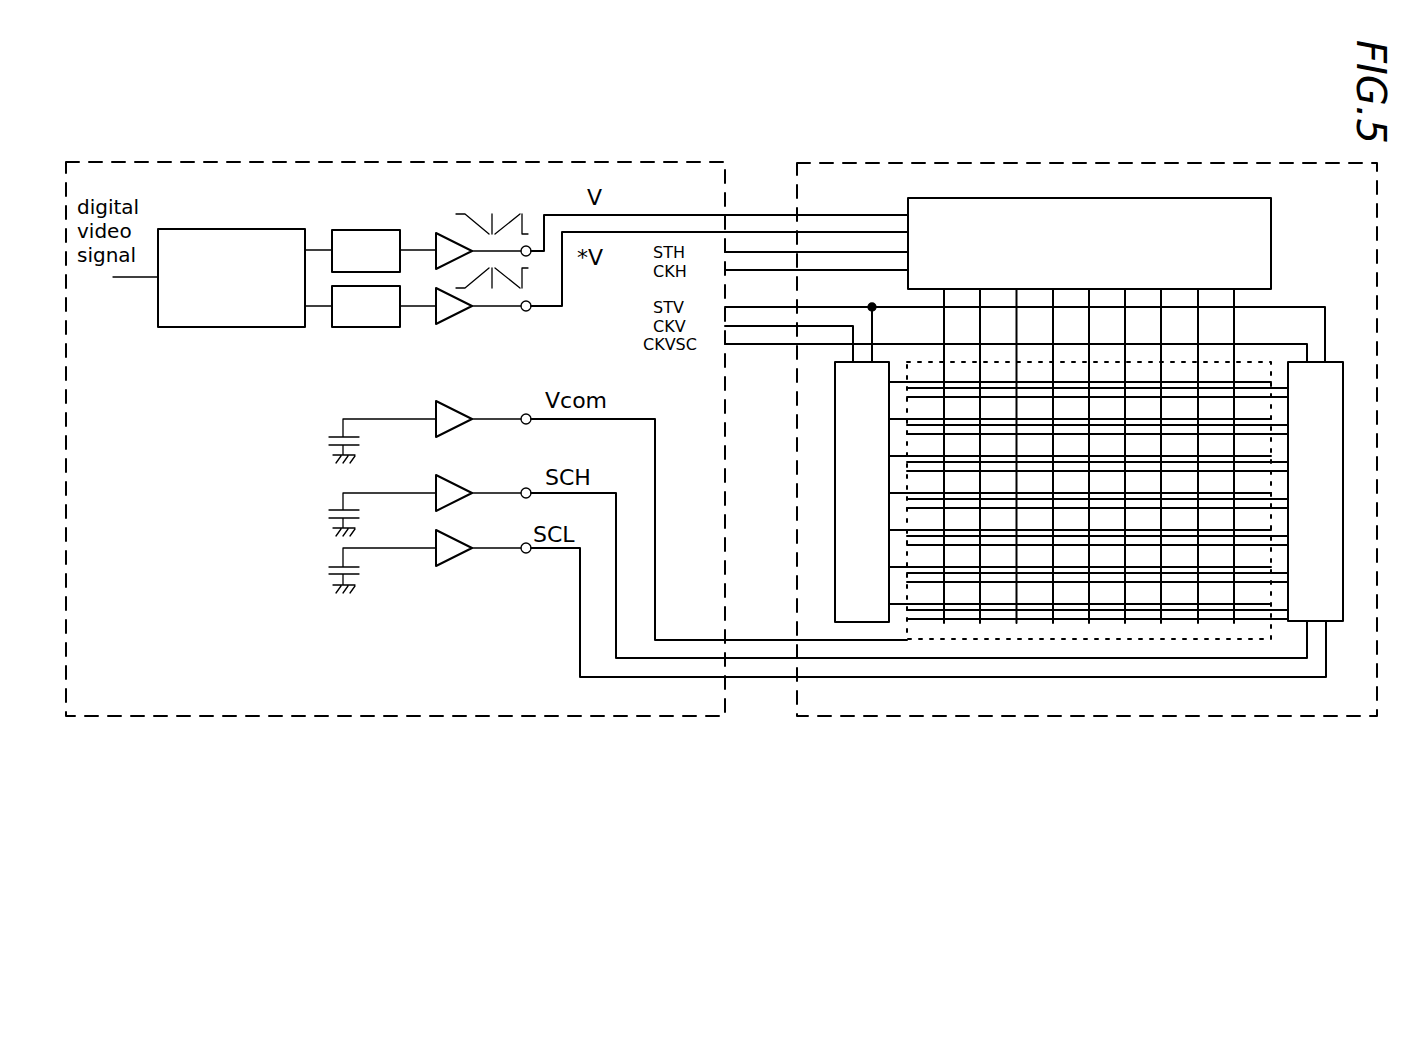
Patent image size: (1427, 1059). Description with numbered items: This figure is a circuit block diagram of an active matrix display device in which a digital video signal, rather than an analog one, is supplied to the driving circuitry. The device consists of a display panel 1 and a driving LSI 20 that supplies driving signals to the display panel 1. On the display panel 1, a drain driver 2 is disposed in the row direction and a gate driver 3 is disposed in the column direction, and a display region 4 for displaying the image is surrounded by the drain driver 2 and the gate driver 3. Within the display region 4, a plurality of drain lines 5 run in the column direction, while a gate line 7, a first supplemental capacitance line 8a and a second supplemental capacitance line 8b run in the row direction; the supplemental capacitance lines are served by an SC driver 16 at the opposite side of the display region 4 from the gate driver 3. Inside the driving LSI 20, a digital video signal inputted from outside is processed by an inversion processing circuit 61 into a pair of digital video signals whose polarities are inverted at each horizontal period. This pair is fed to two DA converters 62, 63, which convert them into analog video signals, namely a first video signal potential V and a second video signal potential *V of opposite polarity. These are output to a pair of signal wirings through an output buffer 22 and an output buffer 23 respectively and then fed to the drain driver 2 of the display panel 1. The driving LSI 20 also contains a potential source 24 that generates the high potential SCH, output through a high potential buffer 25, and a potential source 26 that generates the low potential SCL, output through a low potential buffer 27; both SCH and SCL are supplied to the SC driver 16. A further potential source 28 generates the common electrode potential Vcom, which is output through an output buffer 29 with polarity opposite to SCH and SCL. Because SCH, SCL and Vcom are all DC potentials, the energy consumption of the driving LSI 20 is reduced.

The display panel 1 is at (1087, 150).
The drain driver 2 is at (1271, 240).
The gate driver 3 is at (853, 587).
The display region 4 is at (1180, 628).
The drain lines 5 is at (1235, 323).
The gate line 7 is at (923, 382).
The first supplemental capacitance line 8a is at (1280, 387).
The second supplemental capacitance line 8b is at (1258, 398).
The SC driver 16 is at (1343, 585).
The driving LSI 20 is at (467, 716).
The output buffer 22 is at (450, 233).
The output buffer 23 is at (455, 318).
The potential source 24 is at (365, 518).
The high potential buffer 25 is at (455, 505).
The potential source 26 is at (365, 574).
The low potential buffer 27 is at (455, 560).
The potential source 28 is at (365, 445).
The output buffer 29 is at (455, 430).
The inversion processing circuit 61 is at (260, 327).
The DA converter 62 is at (360, 230).
The DA converter 63 is at (363, 327).